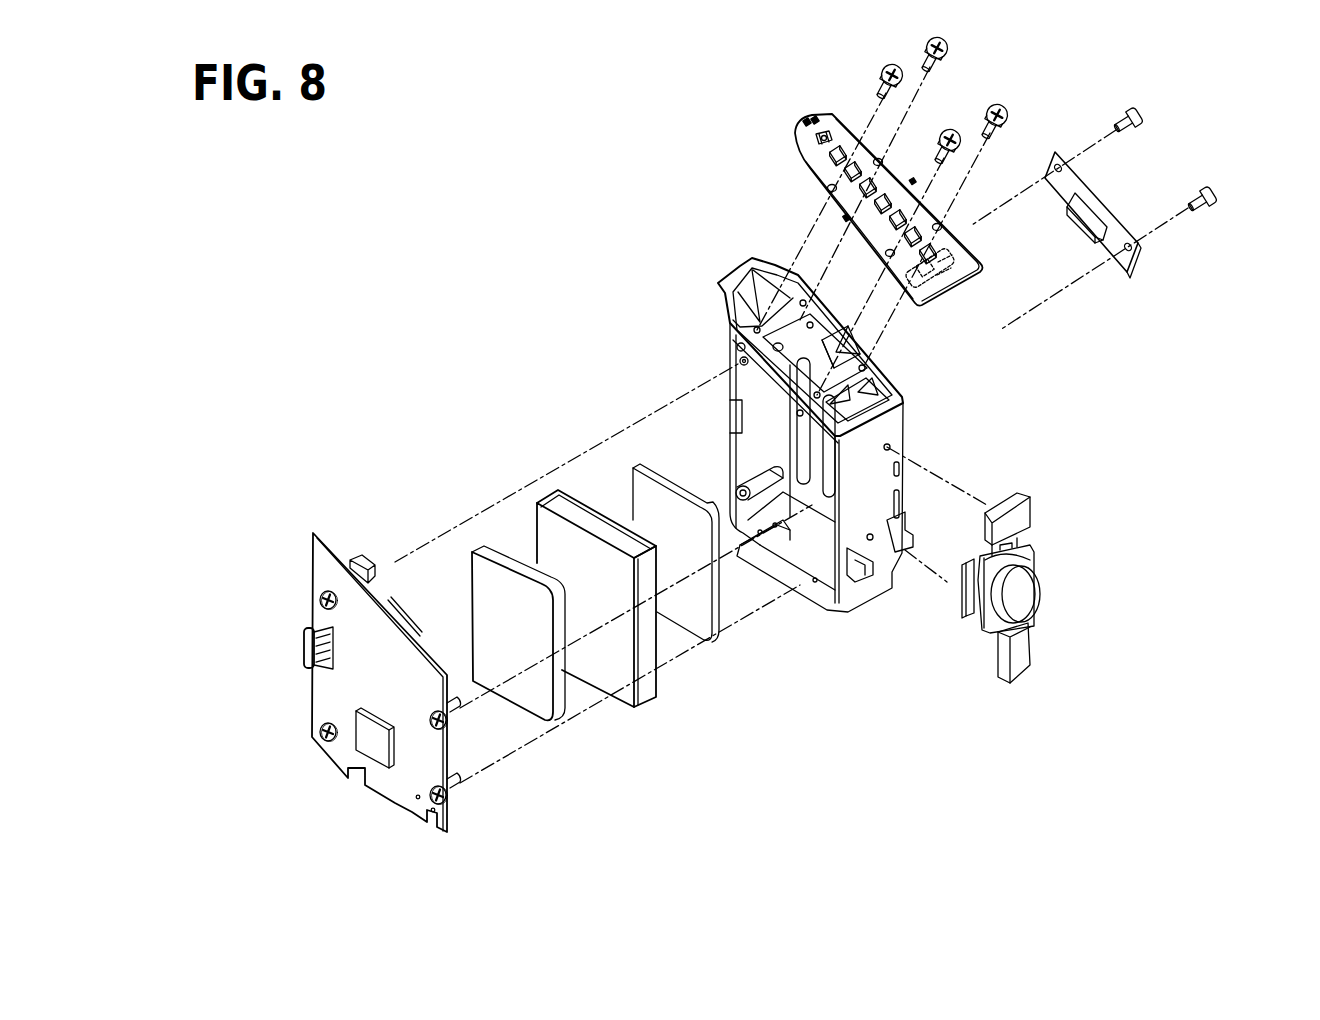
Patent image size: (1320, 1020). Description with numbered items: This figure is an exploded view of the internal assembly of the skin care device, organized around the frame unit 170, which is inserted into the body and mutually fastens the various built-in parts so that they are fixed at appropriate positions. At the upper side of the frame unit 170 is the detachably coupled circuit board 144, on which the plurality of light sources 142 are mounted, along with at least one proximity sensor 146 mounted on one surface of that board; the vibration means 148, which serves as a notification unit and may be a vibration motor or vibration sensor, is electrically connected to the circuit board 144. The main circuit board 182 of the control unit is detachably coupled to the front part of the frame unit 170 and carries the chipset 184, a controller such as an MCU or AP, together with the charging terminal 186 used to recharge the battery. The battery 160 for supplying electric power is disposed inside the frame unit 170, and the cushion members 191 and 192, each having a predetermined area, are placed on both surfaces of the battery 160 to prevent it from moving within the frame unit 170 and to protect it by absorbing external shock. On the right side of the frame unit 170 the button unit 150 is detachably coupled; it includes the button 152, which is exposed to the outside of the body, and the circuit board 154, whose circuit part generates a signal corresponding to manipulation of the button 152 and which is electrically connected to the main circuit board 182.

The light sources 142 is at (847, 173).
The circuit board 144 is at (977, 268).
The proximity sensor 146 is at (820, 139).
The vibration means 148 is at (932, 275).
The button unit 150 is at (1035, 599).
The button 152 is at (1033, 595).
The circuit board 154 is at (962, 610).
The battery 160 is at (648, 688).
The frame unit 170 is at (865, 590).
The main circuit board 182 is at (323, 700).
The chipset 184 is at (367, 740).
The charging terminal 186 is at (303, 648).
The cushion member 191 is at (720, 622).
The cushion member 192 is at (560, 710).